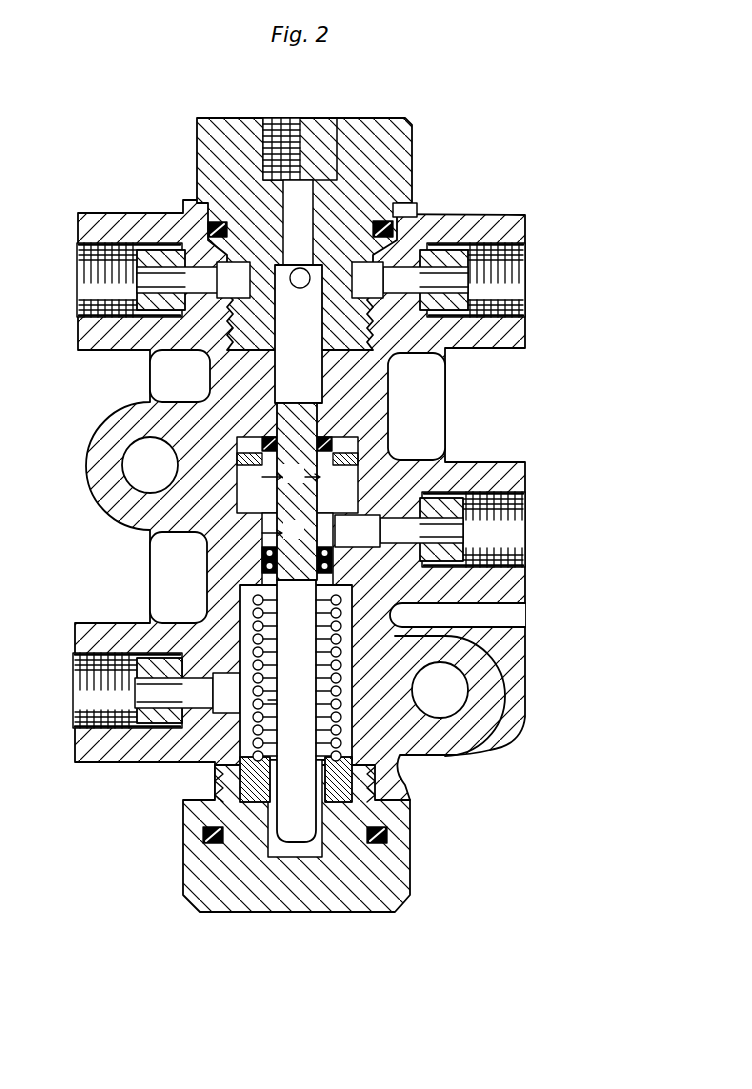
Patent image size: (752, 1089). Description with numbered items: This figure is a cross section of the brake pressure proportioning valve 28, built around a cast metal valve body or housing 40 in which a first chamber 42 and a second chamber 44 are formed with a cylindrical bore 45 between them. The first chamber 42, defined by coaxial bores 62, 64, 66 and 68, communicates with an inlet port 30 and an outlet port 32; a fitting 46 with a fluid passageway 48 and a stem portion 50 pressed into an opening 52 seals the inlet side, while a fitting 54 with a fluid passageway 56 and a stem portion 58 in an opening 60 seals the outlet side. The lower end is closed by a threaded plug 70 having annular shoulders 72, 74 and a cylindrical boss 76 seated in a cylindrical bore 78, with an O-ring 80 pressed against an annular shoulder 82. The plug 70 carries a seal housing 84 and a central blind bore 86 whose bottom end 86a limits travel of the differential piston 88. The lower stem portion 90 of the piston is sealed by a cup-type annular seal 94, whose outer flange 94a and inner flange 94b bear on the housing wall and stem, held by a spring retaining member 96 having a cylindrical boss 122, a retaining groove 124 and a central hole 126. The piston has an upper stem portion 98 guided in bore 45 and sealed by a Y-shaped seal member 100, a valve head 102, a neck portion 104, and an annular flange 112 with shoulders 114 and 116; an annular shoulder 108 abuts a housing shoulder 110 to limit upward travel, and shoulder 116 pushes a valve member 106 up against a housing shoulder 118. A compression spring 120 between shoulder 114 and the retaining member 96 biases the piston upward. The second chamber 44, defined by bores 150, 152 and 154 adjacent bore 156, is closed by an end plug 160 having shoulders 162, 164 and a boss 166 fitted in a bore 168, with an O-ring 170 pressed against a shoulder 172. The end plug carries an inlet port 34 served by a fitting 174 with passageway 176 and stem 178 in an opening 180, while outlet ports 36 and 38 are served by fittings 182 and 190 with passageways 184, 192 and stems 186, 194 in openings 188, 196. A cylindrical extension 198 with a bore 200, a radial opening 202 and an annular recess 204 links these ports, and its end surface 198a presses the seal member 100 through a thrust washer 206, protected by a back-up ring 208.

The brake pressure proportioning valve 28 is at (119, 117).
The inlet port 30 is at (73, 747).
The outlet port 32 is at (505, 498).
The inlet port 34 is at (280, 173).
The outlet port 36 is at (90, 313).
The outlet port 38 is at (515, 248).
The valve body or housing 40 is at (488, 214).
The first chamber 42 is at (523, 673).
The second chamber 44 is at (445, 370).
The cylindrical bore 45 is at (245, 500).
The fitting 46 is at (100, 717).
The fluid passageway 48 is at (137, 695).
The stem portion 50 is at (133, 677).
The opening 52 is at (100, 648).
The fitting 54 is at (482, 527).
The fluid passageway 56 is at (480, 537).
The stem portion 58 is at (480, 563).
The opening 60 is at (480, 587).
The cylindrical bore 62 is at (490, 750).
The cylindrical bore 64 is at (512, 663).
The cylindrical bore 66 is at (480, 633).
The cylindrical bore 68 is at (480, 610).
The closure member or threaded plug 70 is at (317, 922).
The annular shoulder 72 is at (185, 867).
The annular shoulder 74 is at (182, 858).
The cylindrical boss 76 is at (413, 895).
The cylindrical bore 78 is at (408, 880).
The O-ring 80 is at (410, 866).
The annular shoulder 82 is at (387, 835).
The seal housing 84 is at (433, 810).
The central blind bore 86 is at (370, 897).
The bottom end 86a is at (290, 900).
The pressure responsive valve element or differential piston 88 is at (520, 715).
The lower stem portion 90 is at (510, 740).
The cup-type annular seal 94 is at (182, 842).
The outer flange 94a is at (182, 802).
The inner flange 94b is at (182, 823).
The spring retaining member 96 is at (167, 772).
The upper stem portion 98 is at (298, 405).
The Y-shaped seal member 100 is at (148, 410).
The valve head 102 is at (230, 543).
The neck portion 104 is at (248, 573).
The valve member 106 is at (248, 560).
The annular shoulder 108 is at (505, 480).
The annular shoulder 110 is at (245, 527).
The annular flange 112 is at (195, 585).
The annular shoulder 114 is at (230, 612).
The annular shoulder 116 is at (266, 565).
The annular shoulder 118 is at (266, 552).
The compression spring 120 is at (500, 695).
The cylindrical boss 122 is at (427, 785).
The retaining groove 124 is at (107, 767).
The central hole 126 is at (477, 768).
The cylindrical bore 150 is at (115, 440).
The cylindrical bore 152 is at (455, 445).
The cylindrical bore 154 is at (440, 403).
The cylindrical bore 156 is at (123, 472).
The end plug 160 is at (412, 118).
The annular shoulder 162 is at (210, 222).
The annular shoulder 164 is at (196, 214).
The cylindrical boss 166 is at (208, 160).
The cylindrical bore 168 is at (395, 224).
The O-ring 170 is at (414, 208).
The annular shoulder 172 is at (420, 221).
The fitting 174 is at (300, 190).
The fluid passageway 176 is at (309, 200).
The stem portion 178 is at (338, 223).
The opening 180 is at (378, 226).
The fitting 182 is at (95, 250).
The fluid passageway 184 is at (148, 280).
The stem portion 186 is at (120, 302).
The opening 188 is at (152, 232).
The fitting 190 is at (465, 268).
The fluid passageway 192 is at (455, 280).
The stem portion 194 is at (470, 292).
The opening 196 is at (465, 310).
The cylindrical portion or extension 198 is at (205, 375).
The end surface 198a is at (180, 398).
The bore or cavity 200 is at (208, 358).
The radially extending opening 202 is at (258, 160).
The annular recess 204 is at (206, 228).
The thrust washer 206 is at (490, 468).
The back-up ring 208 is at (443, 414).